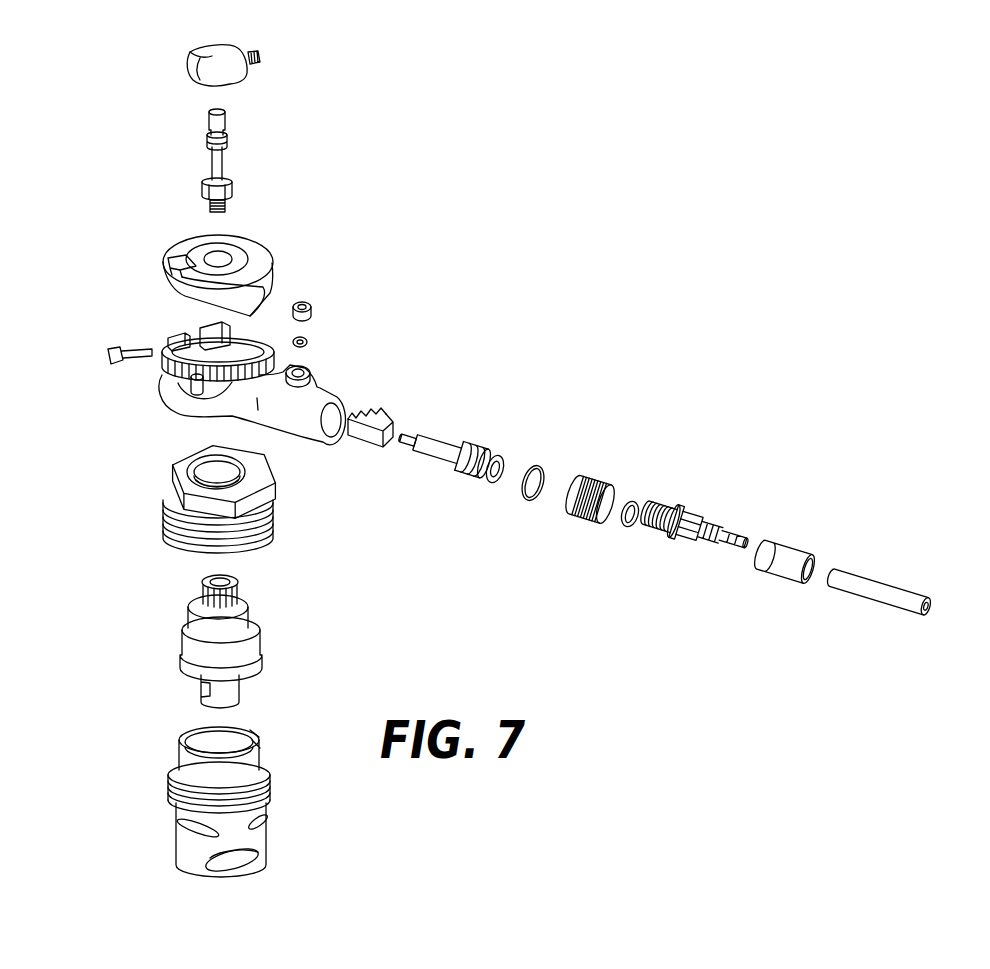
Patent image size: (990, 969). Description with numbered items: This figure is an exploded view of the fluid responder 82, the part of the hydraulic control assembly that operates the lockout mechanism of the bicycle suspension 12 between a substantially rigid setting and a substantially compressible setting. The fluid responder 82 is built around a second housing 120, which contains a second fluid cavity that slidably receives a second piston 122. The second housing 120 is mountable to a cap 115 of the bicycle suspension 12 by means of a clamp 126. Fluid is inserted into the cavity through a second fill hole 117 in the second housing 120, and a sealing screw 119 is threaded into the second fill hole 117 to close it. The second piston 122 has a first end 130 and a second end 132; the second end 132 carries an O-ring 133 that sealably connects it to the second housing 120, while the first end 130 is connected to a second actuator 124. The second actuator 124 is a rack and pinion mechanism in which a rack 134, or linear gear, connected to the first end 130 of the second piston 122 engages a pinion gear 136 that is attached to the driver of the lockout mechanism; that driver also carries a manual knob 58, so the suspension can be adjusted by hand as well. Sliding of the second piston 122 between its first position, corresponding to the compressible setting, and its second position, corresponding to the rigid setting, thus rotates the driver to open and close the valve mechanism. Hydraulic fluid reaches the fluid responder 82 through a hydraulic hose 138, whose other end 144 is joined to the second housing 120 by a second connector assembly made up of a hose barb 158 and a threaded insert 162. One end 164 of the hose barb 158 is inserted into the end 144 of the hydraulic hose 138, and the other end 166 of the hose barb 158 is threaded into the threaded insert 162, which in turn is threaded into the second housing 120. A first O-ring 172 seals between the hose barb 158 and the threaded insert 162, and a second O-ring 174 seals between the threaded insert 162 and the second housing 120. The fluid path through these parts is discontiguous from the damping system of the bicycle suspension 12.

The bicycle suspension 12 is at (157, 744).
The manual knob 58 is at (202, 57).
The fluid responder 82 is at (536, 352).
The cap 115 is at (167, 490).
The second fill hole 117 is at (310, 368).
The sealing screw 119 is at (312, 302).
The second housing 120 is at (297, 423).
The second piston 122 is at (432, 445).
The second actuator 124 is at (355, 450).
The clamp 126 is at (163, 385).
The first end 130 is at (407, 452).
The second end 132 is at (478, 480).
The O-ring 133 is at (498, 455).
The rack 134 is at (368, 412).
The pinion gear 136 is at (203, 593).
The hydraulic hose 138 is at (893, 592).
The other end 144 is at (829, 570).
The hose barb 158 is at (687, 540).
The threaded insert 162 is at (594, 480).
The one end 164 is at (735, 556).
The other end 166 is at (656, 538).
The first O-ring 172 is at (637, 500).
The second O-ring 174 is at (541, 501).